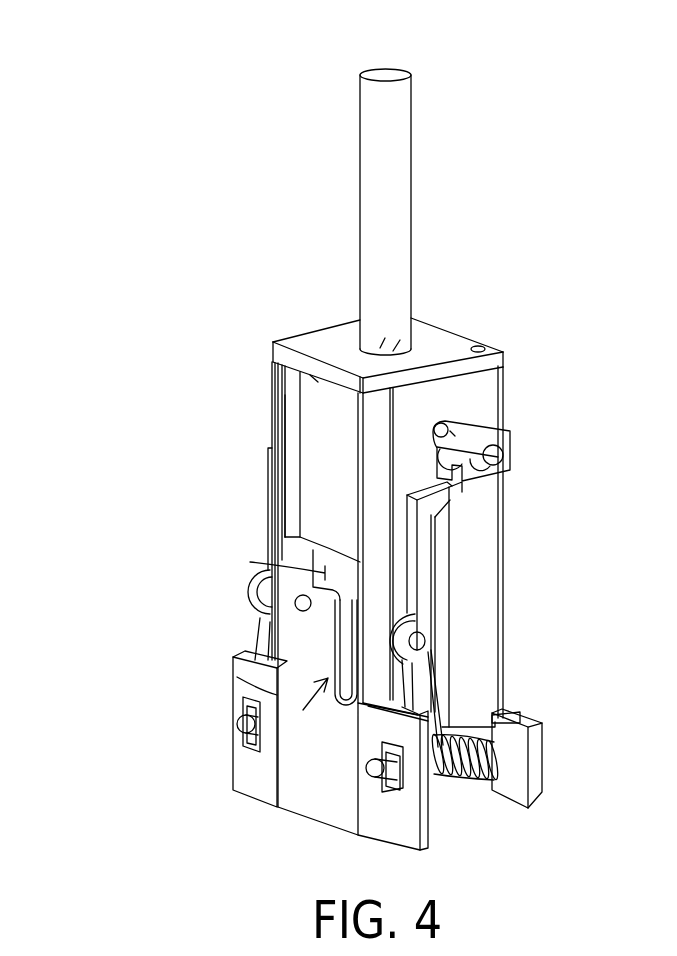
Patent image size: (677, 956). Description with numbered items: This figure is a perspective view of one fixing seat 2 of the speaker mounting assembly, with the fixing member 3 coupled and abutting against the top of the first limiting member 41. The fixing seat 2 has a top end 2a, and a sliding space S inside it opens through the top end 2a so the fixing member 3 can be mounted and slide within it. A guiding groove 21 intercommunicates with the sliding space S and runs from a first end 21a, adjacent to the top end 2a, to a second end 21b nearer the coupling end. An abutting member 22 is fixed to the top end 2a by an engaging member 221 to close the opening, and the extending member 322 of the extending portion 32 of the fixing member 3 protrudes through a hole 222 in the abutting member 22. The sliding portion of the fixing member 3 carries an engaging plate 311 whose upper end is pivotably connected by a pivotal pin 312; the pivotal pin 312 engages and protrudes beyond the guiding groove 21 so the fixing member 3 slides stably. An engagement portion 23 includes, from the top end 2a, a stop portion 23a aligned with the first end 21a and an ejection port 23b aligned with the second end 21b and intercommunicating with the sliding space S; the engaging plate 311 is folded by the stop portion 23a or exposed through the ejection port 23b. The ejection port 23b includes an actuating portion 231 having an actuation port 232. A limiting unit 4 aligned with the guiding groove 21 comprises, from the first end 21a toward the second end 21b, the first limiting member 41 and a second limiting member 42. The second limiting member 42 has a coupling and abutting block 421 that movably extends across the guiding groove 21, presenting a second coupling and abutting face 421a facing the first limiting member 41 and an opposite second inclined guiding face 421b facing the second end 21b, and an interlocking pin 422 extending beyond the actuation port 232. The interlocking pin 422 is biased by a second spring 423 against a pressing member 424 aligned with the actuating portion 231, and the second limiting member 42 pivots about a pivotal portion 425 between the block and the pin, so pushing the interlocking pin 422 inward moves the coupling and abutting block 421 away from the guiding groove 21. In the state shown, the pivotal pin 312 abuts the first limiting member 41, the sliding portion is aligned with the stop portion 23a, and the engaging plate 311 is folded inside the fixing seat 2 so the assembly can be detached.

The fixing seat 2 is at (364, 550).
The top end 2a is at (315, 380).
The fixing member 3 is at (397, 202).
The limiting unit 4 is at (533, 634).
The guiding groove 21 is at (426, 594).
The first end 21a is at (453, 433).
The second end 21b is at (522, 716).
The abutting member 22 is at (392, 302).
The engaging member 221 is at (482, 347).
The hole 222 is at (394, 348).
The engagement portion 23 is at (193, 638).
The stop portion 23a is at (318, 483).
The ejection port 23b is at (229, 721).
The actuating portion 231 is at (401, 795).
The actuation port 232 is at (280, 792).
The extending portion 32 is at (350, 148).
The extending member 322 is at (485, 212).
The engaging plate 311 is at (325, 572).
The pivotal pin 312 is at (447, 424).
The first limiting member 41 is at (515, 440).
The second limiting member 42 is at (502, 660).
The coupling and abutting block 421 is at (542, 601).
The second coupling and abutting face 421a is at (464, 492).
The second inclined guiding face 421b is at (452, 506).
The interlocking pin 422 is at (370, 772).
The second spring 423 is at (538, 786).
The pressing member 424 is at (510, 803).
The pivotal portion 425 is at (428, 639).
The sliding space S is at (318, 690).